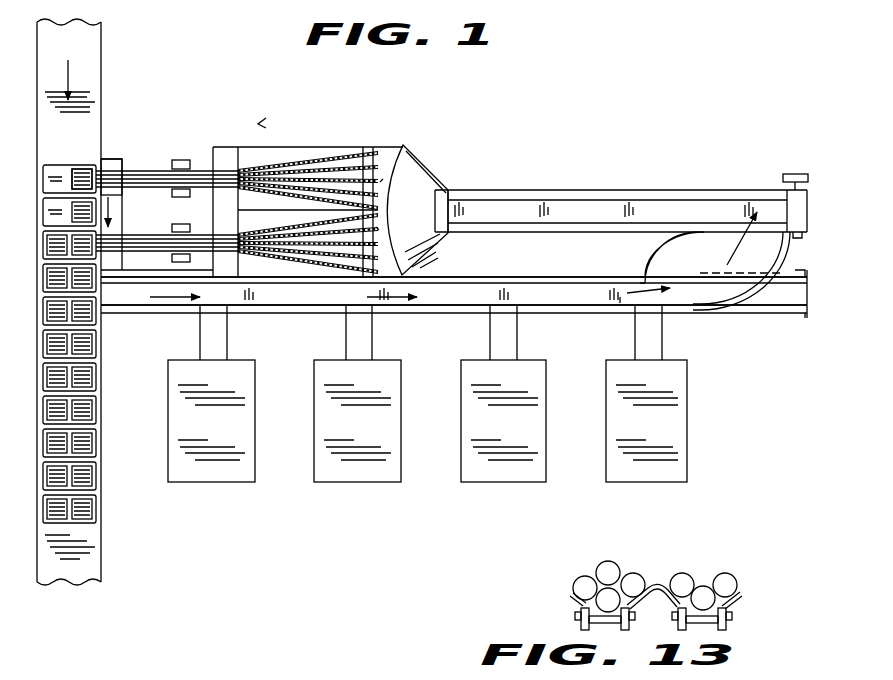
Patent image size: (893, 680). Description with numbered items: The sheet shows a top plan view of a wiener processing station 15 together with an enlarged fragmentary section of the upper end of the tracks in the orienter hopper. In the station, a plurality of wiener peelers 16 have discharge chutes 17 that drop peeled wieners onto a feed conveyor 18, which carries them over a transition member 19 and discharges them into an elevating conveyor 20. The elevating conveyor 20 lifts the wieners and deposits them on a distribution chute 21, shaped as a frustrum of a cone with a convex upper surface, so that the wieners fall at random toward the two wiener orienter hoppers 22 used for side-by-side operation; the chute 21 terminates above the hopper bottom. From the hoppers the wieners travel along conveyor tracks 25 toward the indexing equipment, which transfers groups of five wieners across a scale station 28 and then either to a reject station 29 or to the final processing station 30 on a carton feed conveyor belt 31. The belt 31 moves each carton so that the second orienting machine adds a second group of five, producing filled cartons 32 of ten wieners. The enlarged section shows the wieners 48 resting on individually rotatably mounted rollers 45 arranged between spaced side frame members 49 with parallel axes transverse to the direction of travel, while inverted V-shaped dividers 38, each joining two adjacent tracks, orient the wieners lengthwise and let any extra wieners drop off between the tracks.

In FIG. 1, the wiener processing station 15 is at (441, 509).
In FIG. 1, the wiener peelers 16 is at (221, 482).
In FIG. 1, the discharge chutes 17 is at (218, 344).
In FIG. 1, the feed conveyor 18 is at (480, 290).
In FIG. 1, the transition member 19 is at (707, 258).
In FIG. 1, the elevating conveyor 20 is at (543, 220).
In FIG. 1, the distribution chute 21 is at (425, 160).
In FIG. 13, the distribution chute 21 is at (420, 678).
In FIG. 1, the wiener orienter hoppers 22 is at (383, 148).
In FIG. 1, the conveyor tracks 25 is at (355, 148).
In FIG. 1, the scale station 28 is at (180, 161).
In FIG. 1, the reject station 29 is at (110, 160).
In FIG. 1, the final processing station 30 is at (63, 184).
In FIG. 1, the carton feed conveyor belt 31 is at (87, 92).
In FIG. 1, the filled cartons 32 is at (96, 343).
In FIG. 1, the inverted V-shaped dividers 38 is at (376, 227).
In FIG. 13, the inverted V-shaped dividers 38 is at (571, 582).
In FIG. 13, the rollers 45 is at (580, 628).
In FIG. 13, the wieners 48 is at (638, 574).
In FIG. 13, the side frame members 49 is at (580, 624).